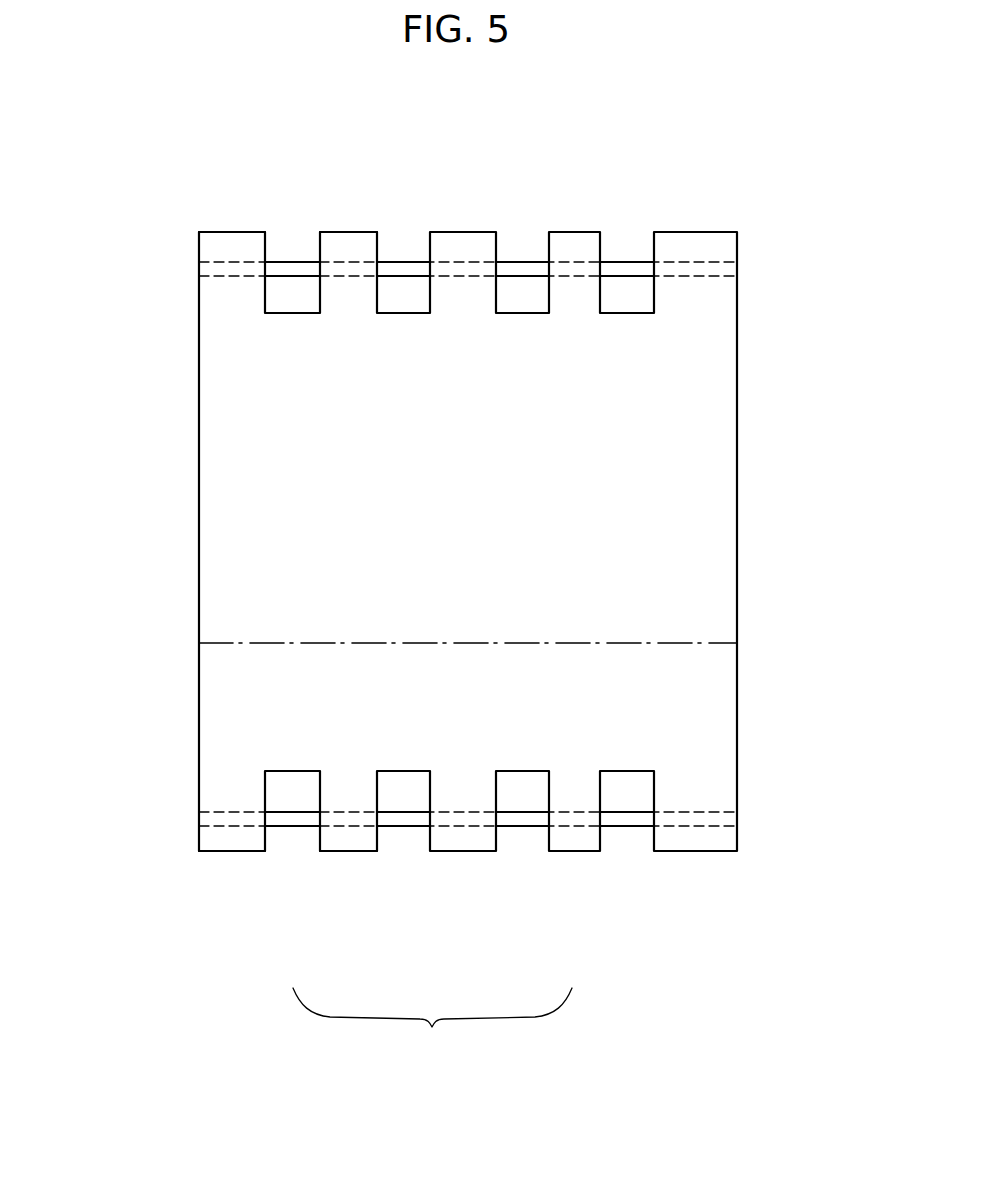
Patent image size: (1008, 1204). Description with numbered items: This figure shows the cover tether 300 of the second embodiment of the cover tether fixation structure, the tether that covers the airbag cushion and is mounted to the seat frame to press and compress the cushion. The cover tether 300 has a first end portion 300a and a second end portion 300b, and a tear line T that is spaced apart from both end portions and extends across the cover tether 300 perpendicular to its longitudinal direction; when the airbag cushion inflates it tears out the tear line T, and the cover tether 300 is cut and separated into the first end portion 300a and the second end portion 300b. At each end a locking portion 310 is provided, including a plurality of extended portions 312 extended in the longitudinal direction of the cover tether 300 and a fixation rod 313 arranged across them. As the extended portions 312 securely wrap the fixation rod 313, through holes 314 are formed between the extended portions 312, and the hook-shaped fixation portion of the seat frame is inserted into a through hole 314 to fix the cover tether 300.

The cover tether 300 is at (453, 541).
The first end portion 300a is at (243, 421).
The second end portion 300b is at (243, 737).
The locking portion 310 is at (432, 1026).
The extended portions 312 is at (232, 242).
The fixation rod 313 is at (402, 242).
The through holes 314 is at (630, 296).
The tear line T is at (577, 643).